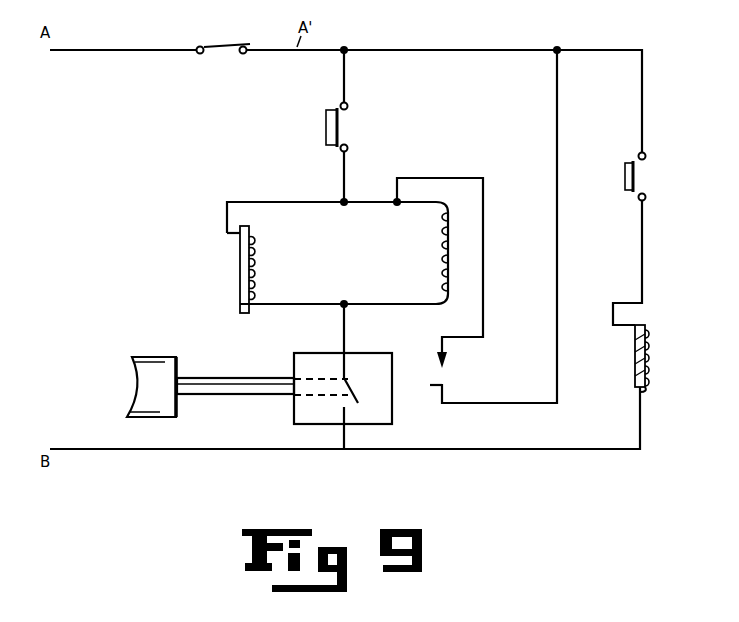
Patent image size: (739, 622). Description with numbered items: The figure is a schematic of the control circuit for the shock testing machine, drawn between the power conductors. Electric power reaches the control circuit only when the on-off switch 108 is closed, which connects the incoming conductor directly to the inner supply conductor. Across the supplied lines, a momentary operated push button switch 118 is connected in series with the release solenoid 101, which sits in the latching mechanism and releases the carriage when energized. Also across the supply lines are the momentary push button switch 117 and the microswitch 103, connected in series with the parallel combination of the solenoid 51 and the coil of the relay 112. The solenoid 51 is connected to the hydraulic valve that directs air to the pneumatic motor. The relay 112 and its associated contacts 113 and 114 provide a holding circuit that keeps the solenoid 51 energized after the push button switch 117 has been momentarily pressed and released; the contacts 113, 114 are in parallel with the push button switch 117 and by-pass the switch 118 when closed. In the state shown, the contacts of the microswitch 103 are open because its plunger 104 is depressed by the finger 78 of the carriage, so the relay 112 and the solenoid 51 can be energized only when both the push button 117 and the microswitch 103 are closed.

The on-off switch 108 is at (213, 46).
The momentary push button switch 117 is at (326, 126).
The momentary operated push button switch 118 is at (625, 176).
The solenoid 51 is at (238, 269).
The relay 112 is at (440, 251).
The relay contact 113 is at (445, 344).
The relay contact 114 is at (445, 385).
The release solenoid 101 is at (648, 360).
The microswitch 103 is at (306, 353).
The plunger 104 is at (270, 398).
The finger 78 is at (152, 417).